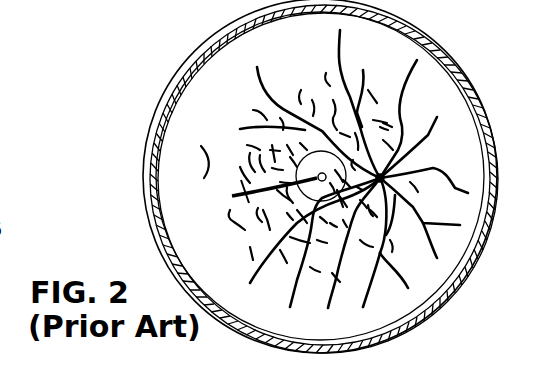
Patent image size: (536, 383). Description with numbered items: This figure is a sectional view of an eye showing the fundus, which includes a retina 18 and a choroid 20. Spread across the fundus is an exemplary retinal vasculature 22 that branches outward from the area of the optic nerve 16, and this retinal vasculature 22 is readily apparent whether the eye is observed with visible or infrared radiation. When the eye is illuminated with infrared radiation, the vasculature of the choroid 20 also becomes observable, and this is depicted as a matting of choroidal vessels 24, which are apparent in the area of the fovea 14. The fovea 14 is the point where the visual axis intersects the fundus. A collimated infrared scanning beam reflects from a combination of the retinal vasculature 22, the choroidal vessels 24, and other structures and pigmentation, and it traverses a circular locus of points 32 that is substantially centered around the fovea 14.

The choroid 20 is at (162, 101).
The retina 18 is at (236, 106).
The retinal vasculature 22 is at (365, 117).
The optic nerve 16 is at (402, 167).
The circular locus of points 32 is at (296, 160).
The fovea 14 is at (265, 189).
The choroidal vessels 24 is at (256, 205).